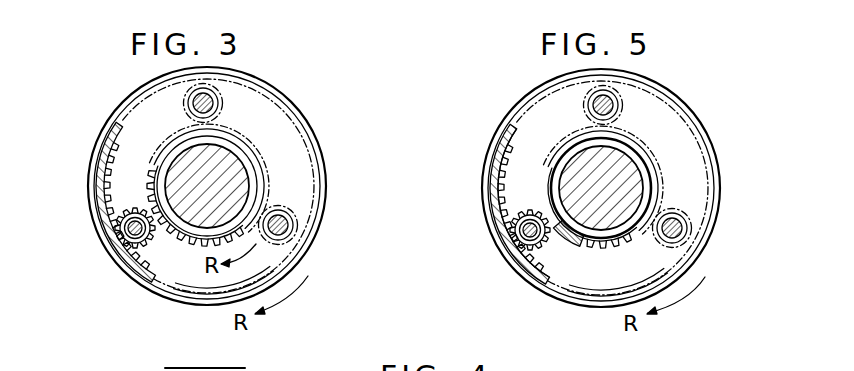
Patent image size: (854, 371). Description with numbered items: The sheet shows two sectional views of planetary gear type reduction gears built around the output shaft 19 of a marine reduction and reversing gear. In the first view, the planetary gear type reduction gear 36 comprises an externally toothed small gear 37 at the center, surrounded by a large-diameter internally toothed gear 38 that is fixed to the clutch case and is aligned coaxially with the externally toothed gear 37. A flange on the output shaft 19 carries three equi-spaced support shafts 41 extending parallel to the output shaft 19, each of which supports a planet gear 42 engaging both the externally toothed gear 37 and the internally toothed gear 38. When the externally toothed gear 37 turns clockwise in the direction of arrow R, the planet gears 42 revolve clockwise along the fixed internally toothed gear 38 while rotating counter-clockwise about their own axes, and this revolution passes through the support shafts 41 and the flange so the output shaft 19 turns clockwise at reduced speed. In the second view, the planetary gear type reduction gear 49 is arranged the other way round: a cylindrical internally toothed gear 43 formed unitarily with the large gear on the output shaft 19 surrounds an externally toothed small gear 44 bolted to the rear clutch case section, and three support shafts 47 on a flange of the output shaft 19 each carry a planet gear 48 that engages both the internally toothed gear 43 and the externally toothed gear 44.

In FIG. 3, the output shaft 19 is at (196, 190).
In FIG. 5, the output shaft 19 is at (585, 193).
In FIG. 3, the planetary gear type reduction gear 36 is at (325, 166).
In FIG. 3, the externally toothed gear 37 is at (178, 246).
In FIG. 3, the internally toothed gear 38 is at (97, 211).
In FIG. 3, the support shafts 41 is at (127, 232).
In FIG. 3, the planet gear 42 is at (130, 238).
In FIG. 5, the internally toothed gear 43 is at (497, 213).
In FIG. 5, the externally toothed small gear 44 is at (547, 240).
In FIG. 5, the support shafts 47 is at (518, 235).
In FIG. 5, the planet gear 48 is at (522, 265).
In FIG. 5, the planetary gear type reduction gear 49 is at (716, 173).